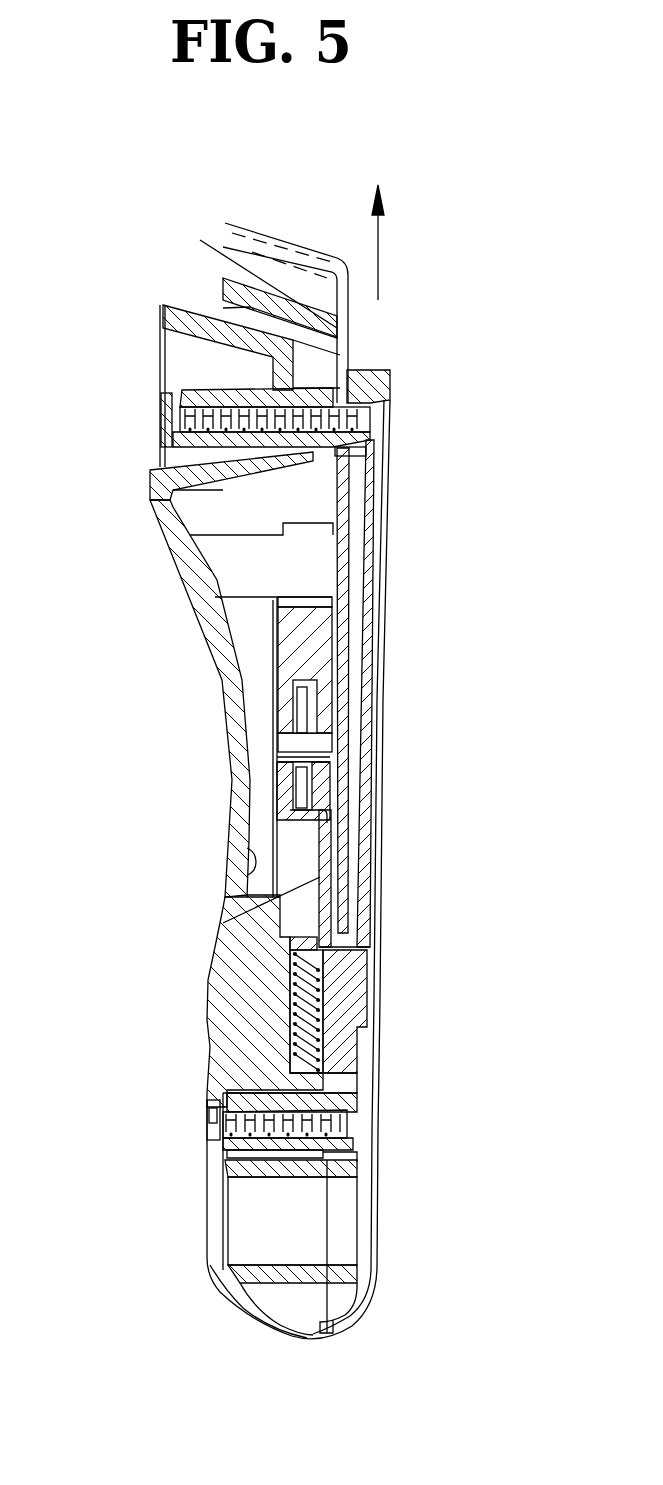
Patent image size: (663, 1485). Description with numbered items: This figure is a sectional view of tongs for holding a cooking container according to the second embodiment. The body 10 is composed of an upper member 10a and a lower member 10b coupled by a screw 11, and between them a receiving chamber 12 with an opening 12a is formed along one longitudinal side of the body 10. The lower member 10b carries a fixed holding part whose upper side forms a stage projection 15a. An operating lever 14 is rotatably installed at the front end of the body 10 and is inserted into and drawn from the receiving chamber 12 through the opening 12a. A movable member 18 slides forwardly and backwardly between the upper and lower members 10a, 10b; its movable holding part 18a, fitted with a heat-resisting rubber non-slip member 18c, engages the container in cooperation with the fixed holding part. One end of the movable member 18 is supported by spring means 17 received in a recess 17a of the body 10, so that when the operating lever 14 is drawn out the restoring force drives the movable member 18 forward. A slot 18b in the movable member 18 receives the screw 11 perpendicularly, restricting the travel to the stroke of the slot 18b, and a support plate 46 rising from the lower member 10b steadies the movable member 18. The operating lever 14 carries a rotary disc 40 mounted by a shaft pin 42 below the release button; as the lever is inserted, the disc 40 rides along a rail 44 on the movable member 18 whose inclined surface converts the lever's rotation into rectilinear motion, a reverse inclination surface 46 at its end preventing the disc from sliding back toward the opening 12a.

The body 10 is at (392, 748).
The upper member 10a is at (352, 1058).
The lower member 10b is at (230, 1037).
The screw 11 is at (335, 440).
The receiving chamber 12 is at (257, 797).
The opening 12a is at (247, 857).
The operating lever 14 is at (293, 647).
The stage projection 15a is at (347, 360).
The spring means 17 is at (330, 987).
The recess 17a is at (340, 1030).
The movable member 18 is at (340, 797).
The movable holding part 18a is at (200, 240).
The slot 18b is at (349, 487).
The non-slip member 18c is at (223, 308).
The rotary disc 40 is at (297, 700).
The shaft pin 42 is at (287, 745).
The rail 44 is at (223, 923).
The support plate / reverse inclination surface 46 is at (232, 553).